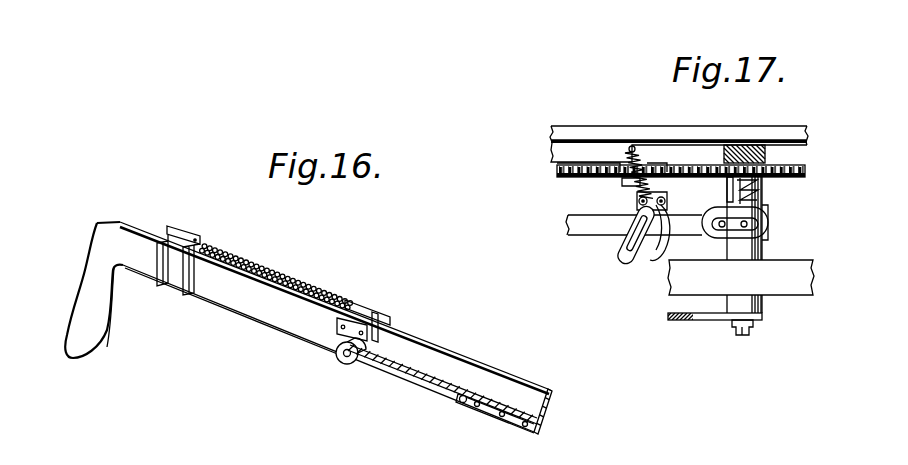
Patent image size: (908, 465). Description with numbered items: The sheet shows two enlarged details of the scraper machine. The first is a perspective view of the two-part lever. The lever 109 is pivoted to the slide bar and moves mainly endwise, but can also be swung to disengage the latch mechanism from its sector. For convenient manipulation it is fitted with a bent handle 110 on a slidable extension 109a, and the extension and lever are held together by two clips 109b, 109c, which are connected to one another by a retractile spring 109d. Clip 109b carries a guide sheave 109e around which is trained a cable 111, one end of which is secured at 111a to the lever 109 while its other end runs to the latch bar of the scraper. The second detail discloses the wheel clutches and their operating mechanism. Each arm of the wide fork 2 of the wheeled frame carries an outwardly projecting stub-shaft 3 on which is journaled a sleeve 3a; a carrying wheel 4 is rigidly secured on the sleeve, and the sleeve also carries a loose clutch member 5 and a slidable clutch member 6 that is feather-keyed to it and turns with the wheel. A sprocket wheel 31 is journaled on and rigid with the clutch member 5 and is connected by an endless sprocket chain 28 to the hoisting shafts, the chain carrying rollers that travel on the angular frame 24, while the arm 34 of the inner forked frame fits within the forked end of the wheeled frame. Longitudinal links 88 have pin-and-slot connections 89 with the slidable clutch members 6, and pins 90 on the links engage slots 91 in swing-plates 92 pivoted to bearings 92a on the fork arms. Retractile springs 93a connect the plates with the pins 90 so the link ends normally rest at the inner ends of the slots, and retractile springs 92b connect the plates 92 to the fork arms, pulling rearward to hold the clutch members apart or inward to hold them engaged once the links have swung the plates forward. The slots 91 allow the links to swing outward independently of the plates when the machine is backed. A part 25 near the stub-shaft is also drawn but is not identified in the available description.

In FIG. 16, the bent handle 110 is at (72, 313).
In FIG. 16, the lever 109 is at (437, 347).
In FIG. 16, the slidable extension 109a is at (268, 316).
In FIG. 16, the clip 109b is at (390, 320).
In FIG. 16, the clip 109c is at (157, 287).
In FIG. 16, the retractile spring 109d is at (290, 275).
In FIG. 16, the guide sheave 109e is at (350, 364).
In FIG. 16, the cable 111 is at (403, 382).
In FIG. 16, the cable attachment point 111a is at (463, 407).
In FIG. 17, the fork 2 is at (573, 150).
In FIG. 17, the arms of forked-frame 34 is at (570, 127).
In FIG. 17, the angular frames 24 is at (735, 146).
In FIG. 17, the sprocket wheels 31 is at (787, 167).
In FIG. 17, the sprocket chains 28 is at (803, 170).
In FIG. 17, the bearings 92a is at (647, 162).
In FIG. 17, the retractile springs 92b is at (625, 185).
In FIG. 17, the swing-plates 92 is at (638, 208).
In FIG. 17, the longitudinal links 88 is at (572, 228).
In FIG. 17, the pin-and-slot connections 89 is at (760, 231).
In FIG. 17, the pins 90 is at (620, 247).
In FIG. 17, the slots 91 is at (632, 245).
In FIG. 17, the retractile springs 93a is at (663, 225).
In FIG. 17, the stub-shafts 3 is at (747, 327).
In FIG. 17, the sleeves 3a is at (760, 188).
In FIG. 17, the loose clutch members 5 is at (757, 182).
In FIG. 17, the slidable clutch members 6 is at (767, 215).
In FIG. 17, the carrying wheels 4 is at (800, 278).
In FIG. 17, the base plate 25 is at (710, 332).